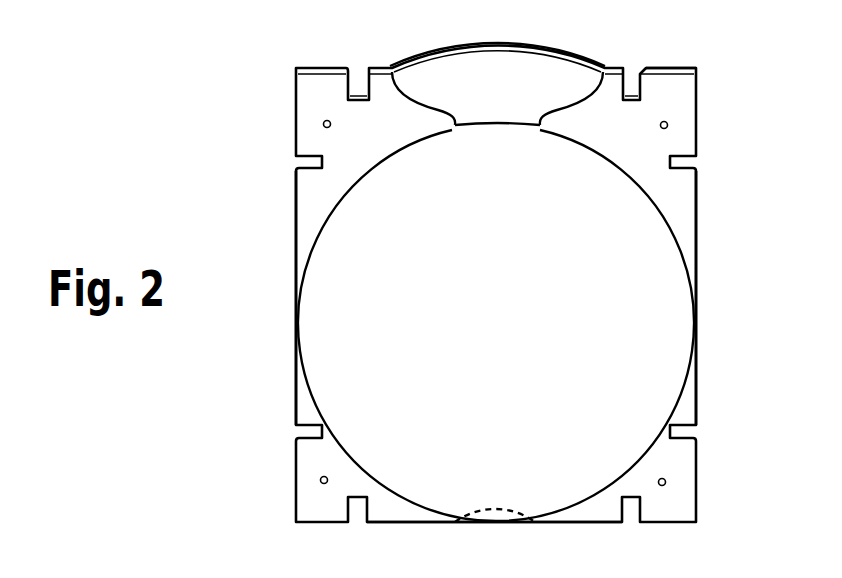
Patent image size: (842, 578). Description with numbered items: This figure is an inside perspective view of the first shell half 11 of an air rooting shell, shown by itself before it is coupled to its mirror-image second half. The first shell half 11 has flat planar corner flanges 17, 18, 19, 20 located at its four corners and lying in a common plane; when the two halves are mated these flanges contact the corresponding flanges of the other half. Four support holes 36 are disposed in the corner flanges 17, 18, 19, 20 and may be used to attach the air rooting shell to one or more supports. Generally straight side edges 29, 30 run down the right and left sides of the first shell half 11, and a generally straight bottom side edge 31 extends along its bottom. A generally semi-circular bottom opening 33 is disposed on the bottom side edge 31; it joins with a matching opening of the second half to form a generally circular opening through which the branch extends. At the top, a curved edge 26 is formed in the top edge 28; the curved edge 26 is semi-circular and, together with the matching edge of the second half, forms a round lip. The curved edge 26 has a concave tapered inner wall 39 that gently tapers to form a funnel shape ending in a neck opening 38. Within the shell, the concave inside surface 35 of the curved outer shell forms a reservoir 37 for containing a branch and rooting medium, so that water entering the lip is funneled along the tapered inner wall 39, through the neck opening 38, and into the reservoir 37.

The first shell half 11 is at (289, 74).
The corner flange 17 is at (618, 160).
The corner flange 18 is at (647, 517).
The corner flange 19 is at (318, 517).
The corner flange 20 is at (340, 160).
The curved edge 26 is at (503, 43).
The top edge 28 is at (678, 68).
The side edge 29 is at (296, 251).
The side edge 30 is at (697, 232).
The bottom side edge 31 is at (548, 523).
The bottom opening 33 is at (493, 524).
The concave inside surface 35 is at (394, 249).
The support holes 36 is at (324, 121).
The reservoir 37 is at (533, 316).
The neck opening 38 is at (462, 122).
The tapered inner wall 39 is at (416, 95).